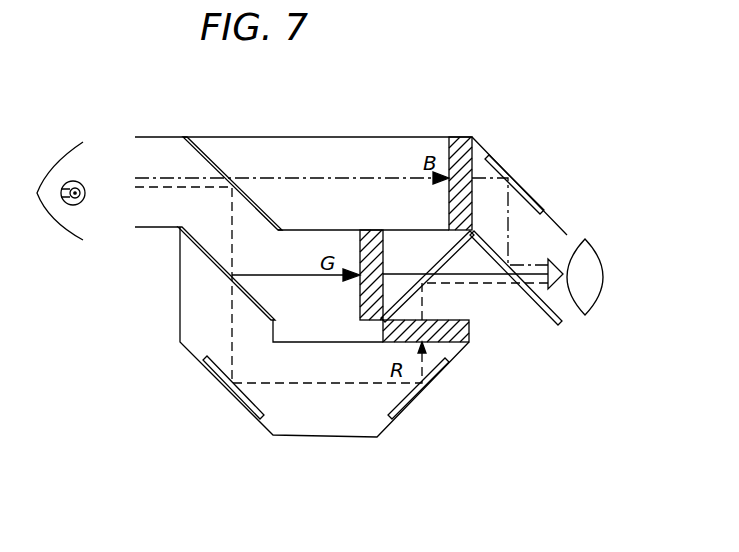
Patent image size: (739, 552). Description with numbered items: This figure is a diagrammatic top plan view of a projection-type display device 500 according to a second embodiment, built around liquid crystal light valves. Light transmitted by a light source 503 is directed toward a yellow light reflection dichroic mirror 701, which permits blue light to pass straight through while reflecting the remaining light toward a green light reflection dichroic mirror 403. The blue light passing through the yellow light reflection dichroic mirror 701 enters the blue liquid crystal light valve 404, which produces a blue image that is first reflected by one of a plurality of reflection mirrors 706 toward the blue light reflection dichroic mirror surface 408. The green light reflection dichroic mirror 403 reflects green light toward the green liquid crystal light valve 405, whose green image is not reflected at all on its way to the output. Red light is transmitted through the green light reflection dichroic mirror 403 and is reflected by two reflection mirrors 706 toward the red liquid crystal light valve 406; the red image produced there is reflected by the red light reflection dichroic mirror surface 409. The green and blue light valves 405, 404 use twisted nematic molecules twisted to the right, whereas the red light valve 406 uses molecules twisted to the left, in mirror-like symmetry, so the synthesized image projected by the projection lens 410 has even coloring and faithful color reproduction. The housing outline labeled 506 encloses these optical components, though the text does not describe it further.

The projection-type display device 500 is at (351, 264).
The light source 503 is at (62, 160).
The housing 506 is at (330, 128).
The yellow light reflection dichroic mirror 701 is at (207, 153).
The green light reflection dichroic mirror 403 is at (205, 257).
The blue liquid crystal light valve 404 is at (458, 132).
The green liquid crystal light valve 405 is at (360, 306).
The red liquid crystal light valve 406 is at (470, 333).
The blue light reflection dichroic mirror surface 408 is at (455, 256).
The red light reflection dichroic mirror surface 409 is at (558, 326).
The projection lens 410 is at (592, 270).
The reflection mirrors 706 is at (504, 167).